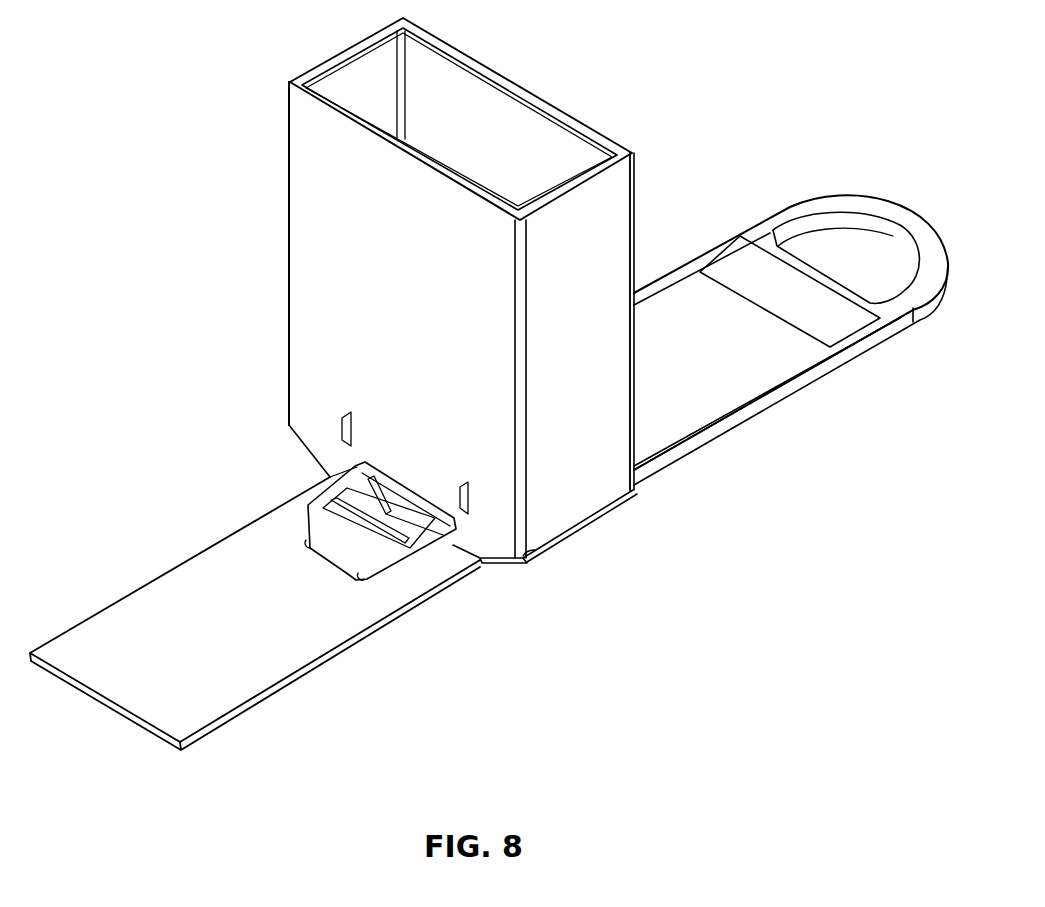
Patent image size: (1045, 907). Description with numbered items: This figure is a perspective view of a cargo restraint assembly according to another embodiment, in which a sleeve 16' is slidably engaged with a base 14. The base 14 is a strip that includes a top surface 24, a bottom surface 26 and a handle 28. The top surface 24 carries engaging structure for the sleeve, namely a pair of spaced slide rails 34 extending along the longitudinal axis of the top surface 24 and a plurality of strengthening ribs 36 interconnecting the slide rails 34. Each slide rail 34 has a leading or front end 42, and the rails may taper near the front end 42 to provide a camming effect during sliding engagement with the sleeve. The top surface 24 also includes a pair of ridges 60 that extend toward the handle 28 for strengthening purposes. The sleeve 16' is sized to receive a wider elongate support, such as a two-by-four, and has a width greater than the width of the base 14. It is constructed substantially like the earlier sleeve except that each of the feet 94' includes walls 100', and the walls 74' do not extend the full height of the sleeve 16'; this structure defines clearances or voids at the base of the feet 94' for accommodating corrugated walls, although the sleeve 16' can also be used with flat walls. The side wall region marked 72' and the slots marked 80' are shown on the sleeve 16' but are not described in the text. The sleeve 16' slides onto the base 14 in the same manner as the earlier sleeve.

The sleeve 16' is at (463, 290).
The walls 74' is at (454, 286).
The side wall of housing 72' is at (271, 253).
The slot 80' is at (441, 450).
The feet 94' is at (419, 484).
The walls 100' is at (409, 526).
The slide rails 34 is at (330, 477).
The strengthening ribs 36 is at (362, 550).
The front end 42 is at (303, 528).
The top surface 24 is at (258, 668).
The base 14 is at (676, 264).
The bottom surface 26 is at (780, 402).
The ridges 60 is at (730, 230).
The handle 28 is at (862, 208).